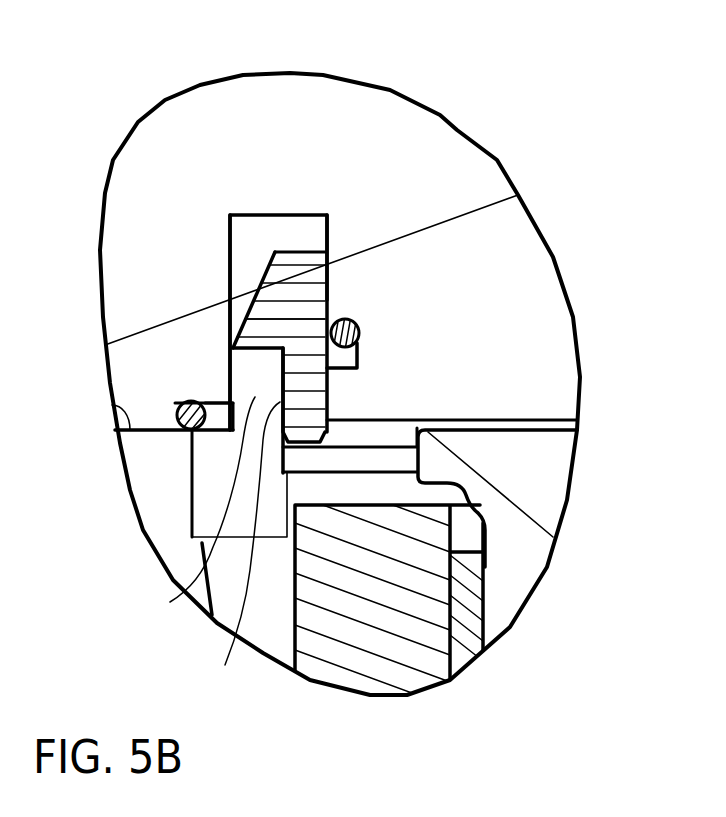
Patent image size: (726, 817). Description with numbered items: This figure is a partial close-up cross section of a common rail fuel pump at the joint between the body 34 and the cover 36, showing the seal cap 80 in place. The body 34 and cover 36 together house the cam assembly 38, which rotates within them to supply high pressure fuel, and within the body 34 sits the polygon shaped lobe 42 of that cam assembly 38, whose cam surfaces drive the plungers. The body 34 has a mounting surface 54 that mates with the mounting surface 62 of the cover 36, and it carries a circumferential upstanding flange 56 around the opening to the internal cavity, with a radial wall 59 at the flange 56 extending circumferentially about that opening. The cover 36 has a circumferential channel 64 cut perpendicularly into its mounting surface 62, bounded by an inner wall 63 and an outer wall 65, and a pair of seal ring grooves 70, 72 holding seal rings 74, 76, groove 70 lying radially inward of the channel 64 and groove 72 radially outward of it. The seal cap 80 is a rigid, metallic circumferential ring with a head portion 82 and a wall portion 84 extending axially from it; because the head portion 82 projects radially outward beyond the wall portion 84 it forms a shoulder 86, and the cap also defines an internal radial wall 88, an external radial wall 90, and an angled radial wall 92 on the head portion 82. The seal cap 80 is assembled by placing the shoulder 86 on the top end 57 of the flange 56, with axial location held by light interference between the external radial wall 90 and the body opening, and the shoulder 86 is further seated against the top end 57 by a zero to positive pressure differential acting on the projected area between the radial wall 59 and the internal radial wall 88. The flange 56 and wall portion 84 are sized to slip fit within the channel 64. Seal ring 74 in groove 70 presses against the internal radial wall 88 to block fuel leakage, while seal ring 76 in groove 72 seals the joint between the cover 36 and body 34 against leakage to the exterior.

The body 34 is at (162, 533).
The cover 36 is at (320, 85).
The cam assembly 38 is at (553, 472).
The polygon shaped lobe 42 is at (420, 590).
The mounting surface 54 is at (113, 405).
The flange 56 is at (196, 507).
The top end 57 is at (258, 358).
The radial wall 59 is at (237, 550).
The mounting surface 62 is at (145, 432).
The inner wall 63 is at (330, 225).
The channel 64 is at (253, 227).
The outer wall 65 is at (230, 240).
The seal ring groove 70 is at (357, 357).
The seal ring groove 72 is at (215, 410).
The seal ring 74 is at (357, 323).
The seal ring 76 is at (177, 417).
The seal cap 80 is at (300, 303).
The head portion 82 is at (292, 273).
The wall portion 84 is at (308, 385).
The shoulder 86 is at (258, 337).
The internal radial wall 88 is at (330, 402).
The external radial wall 90 is at (230, 415).
The angled radial wall 92 is at (272, 258).